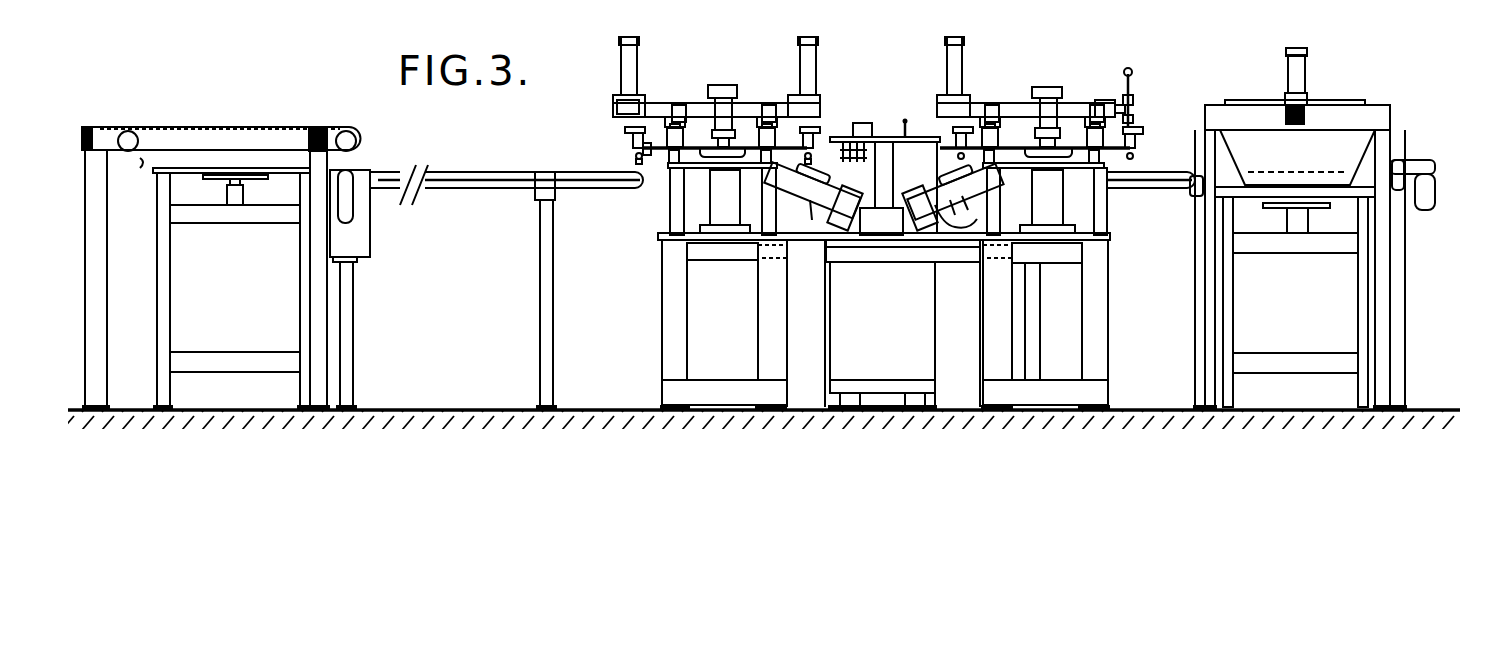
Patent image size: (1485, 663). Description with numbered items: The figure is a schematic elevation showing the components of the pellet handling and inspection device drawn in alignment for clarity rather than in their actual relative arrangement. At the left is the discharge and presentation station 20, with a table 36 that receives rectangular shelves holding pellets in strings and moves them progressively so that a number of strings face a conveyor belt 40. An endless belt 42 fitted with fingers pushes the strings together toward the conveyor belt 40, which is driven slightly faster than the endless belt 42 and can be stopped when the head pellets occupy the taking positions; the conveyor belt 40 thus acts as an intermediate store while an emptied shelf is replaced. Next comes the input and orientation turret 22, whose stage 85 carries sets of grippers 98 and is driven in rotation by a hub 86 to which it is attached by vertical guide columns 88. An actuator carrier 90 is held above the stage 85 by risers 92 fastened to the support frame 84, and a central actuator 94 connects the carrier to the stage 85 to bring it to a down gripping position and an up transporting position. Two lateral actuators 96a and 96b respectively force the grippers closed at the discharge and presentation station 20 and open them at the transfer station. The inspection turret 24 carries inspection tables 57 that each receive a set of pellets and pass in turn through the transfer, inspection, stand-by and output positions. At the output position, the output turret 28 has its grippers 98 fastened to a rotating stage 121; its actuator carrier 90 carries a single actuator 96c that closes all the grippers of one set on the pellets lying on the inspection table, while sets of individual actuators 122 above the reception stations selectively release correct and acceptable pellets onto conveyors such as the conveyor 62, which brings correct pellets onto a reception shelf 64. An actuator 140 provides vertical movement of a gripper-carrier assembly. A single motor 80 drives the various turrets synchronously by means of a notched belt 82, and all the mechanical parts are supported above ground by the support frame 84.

The discharge and presentation station 20 is at (563, 169).
The input and orientation turret 22 is at (618, 128).
The inspection turret 24 is at (903, 127).
The output turret 28 is at (1144, 84).
The table 36 is at (188, 168).
The conveyor belt 40 is at (465, 172).
The endless belt 42 is at (287, 126).
The inspection table 57 is at (807, 245).
The conveyor 62 is at (1153, 182).
The reception shelf 64 is at (1378, 136).
The motor 80 is at (896, 339).
The notched belt 82 is at (1070, 254).
The support frame 84 is at (672, 316).
The stage 85 is at (655, 145).
The hub 86 is at (724, 261).
The vertical guide columns 88 is at (648, 158).
The actuator carrier 90 is at (752, 106).
The risers 92 is at (672, 216).
The central actuator 94 is at (723, 108).
The lateral actuator 96a is at (623, 50).
The lateral actuator 96b is at (814, 47).
The single actuator 96c is at (960, 48).
The grippers 98 is at (636, 160).
The rotating stage 121 is at (1070, 146).
The individual actuators 122 is at (1131, 67).
The actuator 140 is at (1300, 78).